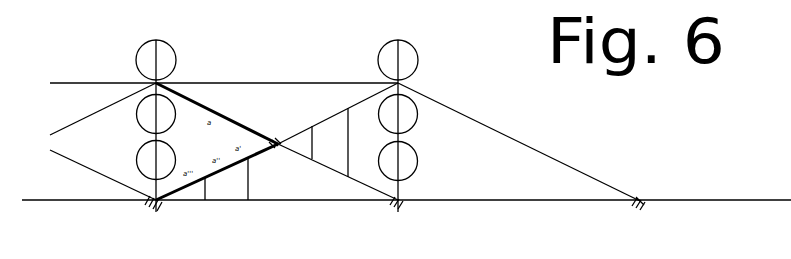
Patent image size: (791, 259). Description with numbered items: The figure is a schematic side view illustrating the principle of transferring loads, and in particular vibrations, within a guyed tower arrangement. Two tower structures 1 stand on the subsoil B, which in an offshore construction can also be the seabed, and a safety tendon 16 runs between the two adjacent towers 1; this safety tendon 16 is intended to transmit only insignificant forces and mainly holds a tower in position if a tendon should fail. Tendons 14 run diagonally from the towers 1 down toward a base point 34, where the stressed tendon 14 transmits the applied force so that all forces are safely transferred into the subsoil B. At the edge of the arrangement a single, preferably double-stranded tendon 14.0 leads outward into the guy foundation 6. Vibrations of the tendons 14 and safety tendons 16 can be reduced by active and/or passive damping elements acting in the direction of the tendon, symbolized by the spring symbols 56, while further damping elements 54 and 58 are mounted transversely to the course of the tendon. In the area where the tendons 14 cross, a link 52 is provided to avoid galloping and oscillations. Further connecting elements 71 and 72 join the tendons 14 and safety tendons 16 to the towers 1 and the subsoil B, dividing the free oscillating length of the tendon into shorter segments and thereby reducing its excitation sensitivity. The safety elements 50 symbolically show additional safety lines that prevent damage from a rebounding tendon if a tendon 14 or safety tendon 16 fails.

The tower structure 1 is at (170, 130).
The guy foundation 6 is at (645, 199).
The tendon 14 is at (68, 160).
The tendon positioned on the edge 14.0 is at (484, 128).
The safety tendon 16 is at (75, 83).
The base point 34 is at (407, 208).
The safety element 50 is at (133, 89).
The link 52 is at (275, 141).
The damping element 54 is at (262, 147).
The spring symbol 56 is at (175, 90).
The damping element 58 is at (370, 203).
The connecting element 71 is at (207, 197).
The connecting element 72 is at (313, 154).
The subsoil B is at (716, 203).